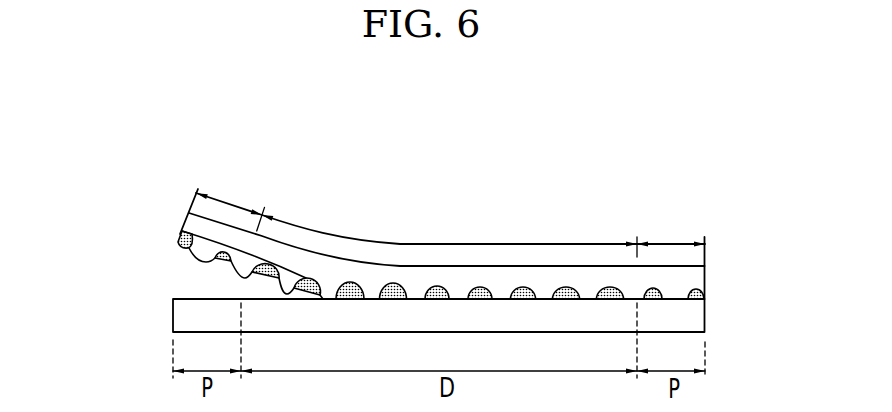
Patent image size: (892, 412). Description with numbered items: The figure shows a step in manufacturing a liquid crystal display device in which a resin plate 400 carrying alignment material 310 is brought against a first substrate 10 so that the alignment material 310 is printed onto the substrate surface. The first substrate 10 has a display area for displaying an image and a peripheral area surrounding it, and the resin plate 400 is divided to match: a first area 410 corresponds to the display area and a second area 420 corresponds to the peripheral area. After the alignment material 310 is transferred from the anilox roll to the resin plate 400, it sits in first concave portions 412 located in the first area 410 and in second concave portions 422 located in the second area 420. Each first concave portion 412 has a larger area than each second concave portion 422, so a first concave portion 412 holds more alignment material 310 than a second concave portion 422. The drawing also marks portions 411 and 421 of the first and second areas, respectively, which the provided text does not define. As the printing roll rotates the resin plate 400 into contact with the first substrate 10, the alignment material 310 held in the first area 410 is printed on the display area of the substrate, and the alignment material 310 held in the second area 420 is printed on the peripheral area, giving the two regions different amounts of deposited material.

The first substrate 10 is at (740, 316).
The alignment material 310 is at (182, 227).
The resin plate 400 is at (588, 266).
The first area 410 is at (450, 220).
The first surface of base layer 411 is at (297, 276).
The first concave portion 412 is at (313, 277).
The second area 420 is at (451, 235).
The connecting portion 421 is at (240, 275).
The second concave portion 422 is at (215, 259).